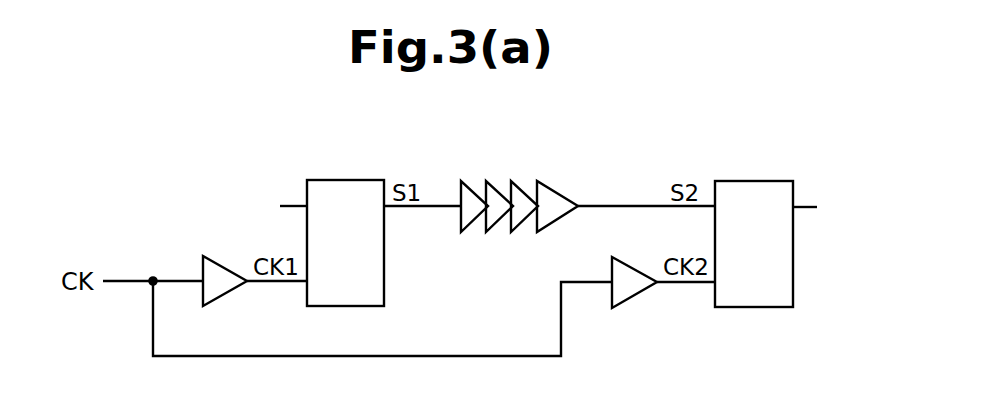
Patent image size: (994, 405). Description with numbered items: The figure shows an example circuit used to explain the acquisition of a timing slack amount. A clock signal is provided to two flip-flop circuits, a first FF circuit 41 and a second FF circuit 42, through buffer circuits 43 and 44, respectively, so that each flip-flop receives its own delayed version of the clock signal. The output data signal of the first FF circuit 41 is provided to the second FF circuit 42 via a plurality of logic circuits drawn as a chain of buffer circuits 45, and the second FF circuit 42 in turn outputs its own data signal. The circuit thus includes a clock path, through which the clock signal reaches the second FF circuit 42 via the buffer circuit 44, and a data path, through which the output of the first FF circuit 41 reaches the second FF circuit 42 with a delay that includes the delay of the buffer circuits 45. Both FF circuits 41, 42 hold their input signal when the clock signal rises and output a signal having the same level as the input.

The first flip-flop circuit 41 is at (345, 180).
The second flip-flop circuit 42 is at (750, 181).
The buffer circuit 43 is at (220, 263).
The buffer circuit 44 is at (627, 297).
The buffer circuits 45 is at (552, 187).